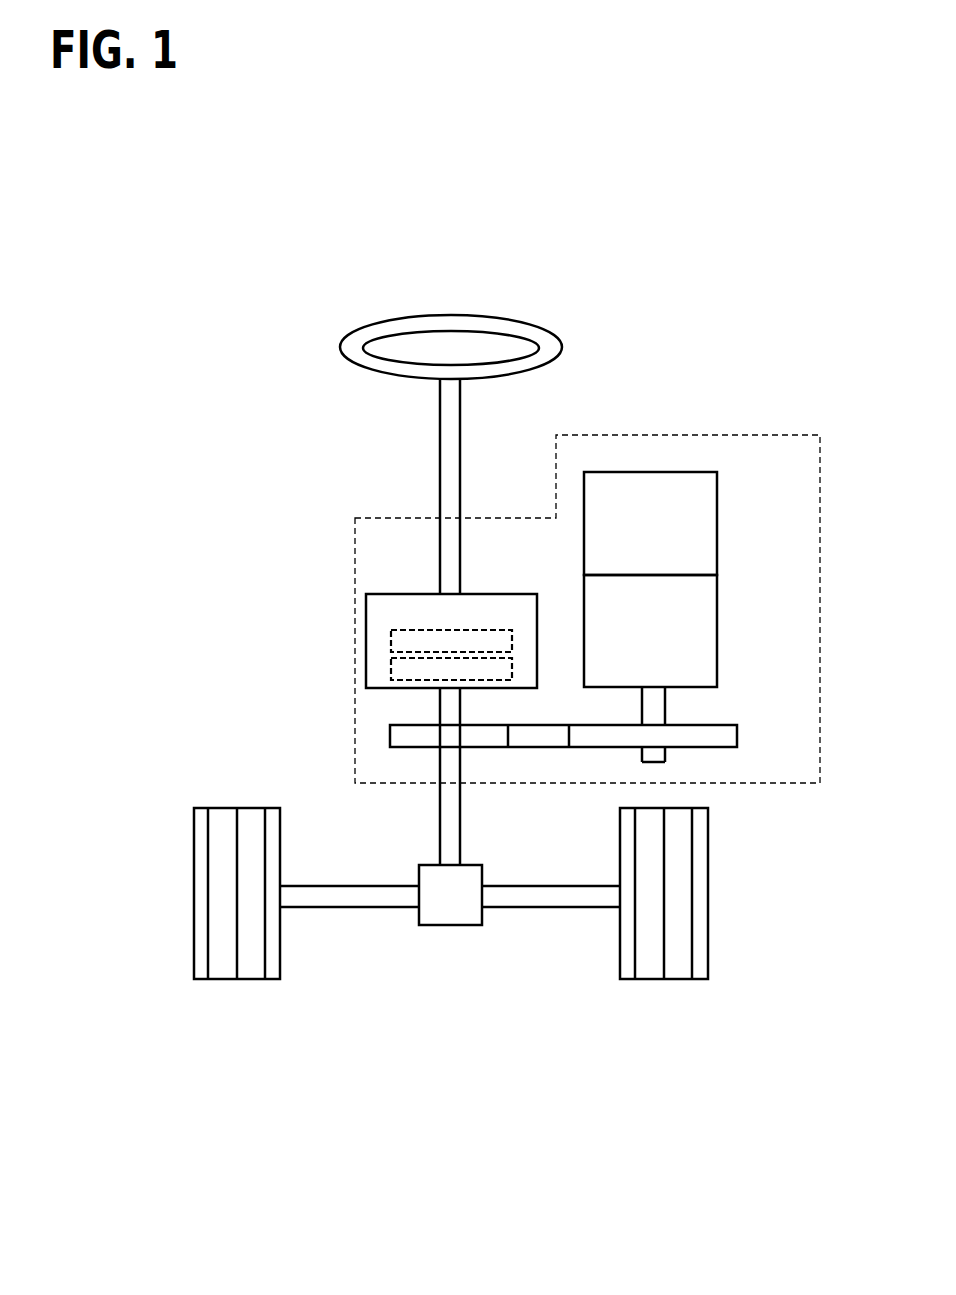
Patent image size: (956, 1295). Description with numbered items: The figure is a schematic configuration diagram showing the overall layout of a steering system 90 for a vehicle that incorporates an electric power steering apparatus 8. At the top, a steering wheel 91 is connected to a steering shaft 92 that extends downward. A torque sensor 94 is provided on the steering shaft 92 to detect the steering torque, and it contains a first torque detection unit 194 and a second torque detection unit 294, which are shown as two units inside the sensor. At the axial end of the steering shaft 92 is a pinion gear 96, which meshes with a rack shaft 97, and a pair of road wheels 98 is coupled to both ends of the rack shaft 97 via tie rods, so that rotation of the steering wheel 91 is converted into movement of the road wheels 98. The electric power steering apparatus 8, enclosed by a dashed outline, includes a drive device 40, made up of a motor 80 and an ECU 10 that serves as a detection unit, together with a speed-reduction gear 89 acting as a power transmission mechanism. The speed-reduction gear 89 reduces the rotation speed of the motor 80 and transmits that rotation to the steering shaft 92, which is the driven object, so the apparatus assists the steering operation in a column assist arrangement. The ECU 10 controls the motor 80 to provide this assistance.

The electric power steering apparatus 8 is at (766, 435).
The ECU 10 is at (717, 500).
The drive device 40 is at (730, 668).
The motor 80 is at (717, 608).
The speed-reduction gear 89 is at (737, 735).
The steering system 90 is at (410, 1058).
The steering wheel 91 is at (340, 349).
The steering shaft 92 is at (440, 437).
The torque sensor 94 is at (392, 594).
The first torque detection unit 194 is at (391, 640).
The second torque detection unit 294 is at (391, 675).
The pinion gear 96 is at (442, 925).
The rack shaft 97 is at (343, 907).
The road wheels 98 is at (253, 979).